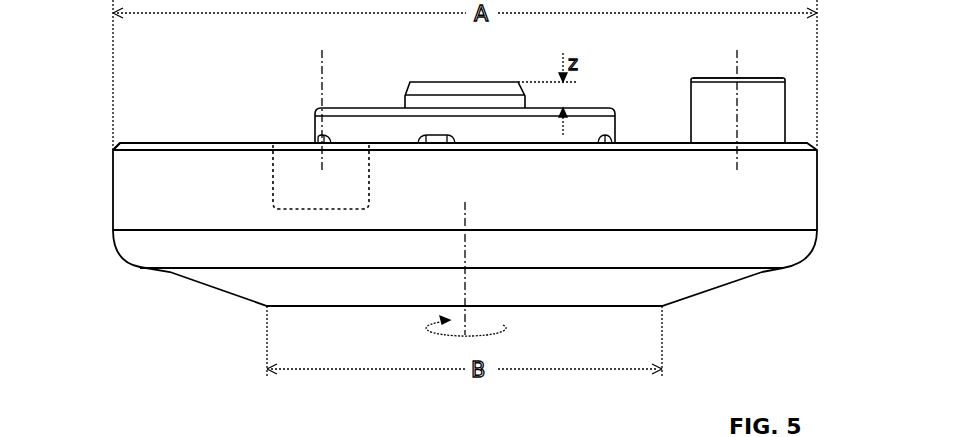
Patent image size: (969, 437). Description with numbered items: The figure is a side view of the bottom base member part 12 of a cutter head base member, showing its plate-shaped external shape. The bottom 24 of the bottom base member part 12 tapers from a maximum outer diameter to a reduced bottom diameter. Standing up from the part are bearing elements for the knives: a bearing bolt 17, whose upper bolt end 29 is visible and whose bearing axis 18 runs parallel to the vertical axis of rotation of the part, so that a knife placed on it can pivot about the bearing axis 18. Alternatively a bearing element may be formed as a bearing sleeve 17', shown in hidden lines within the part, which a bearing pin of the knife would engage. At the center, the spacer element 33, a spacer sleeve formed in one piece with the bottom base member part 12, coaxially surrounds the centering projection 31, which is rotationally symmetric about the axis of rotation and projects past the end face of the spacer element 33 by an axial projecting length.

The bottom base member part 12 is at (135, 240).
The bearing bolt 17 is at (712, 110).
The bearing sleeve 17' is at (278, 155).
The bearing axis 18 is at (322, 77).
The bottom 24 is at (298, 308).
The bolt end 29 is at (711, 77).
The centering projection 31 is at (491, 90).
The spacer element 33 is at (395, 99).